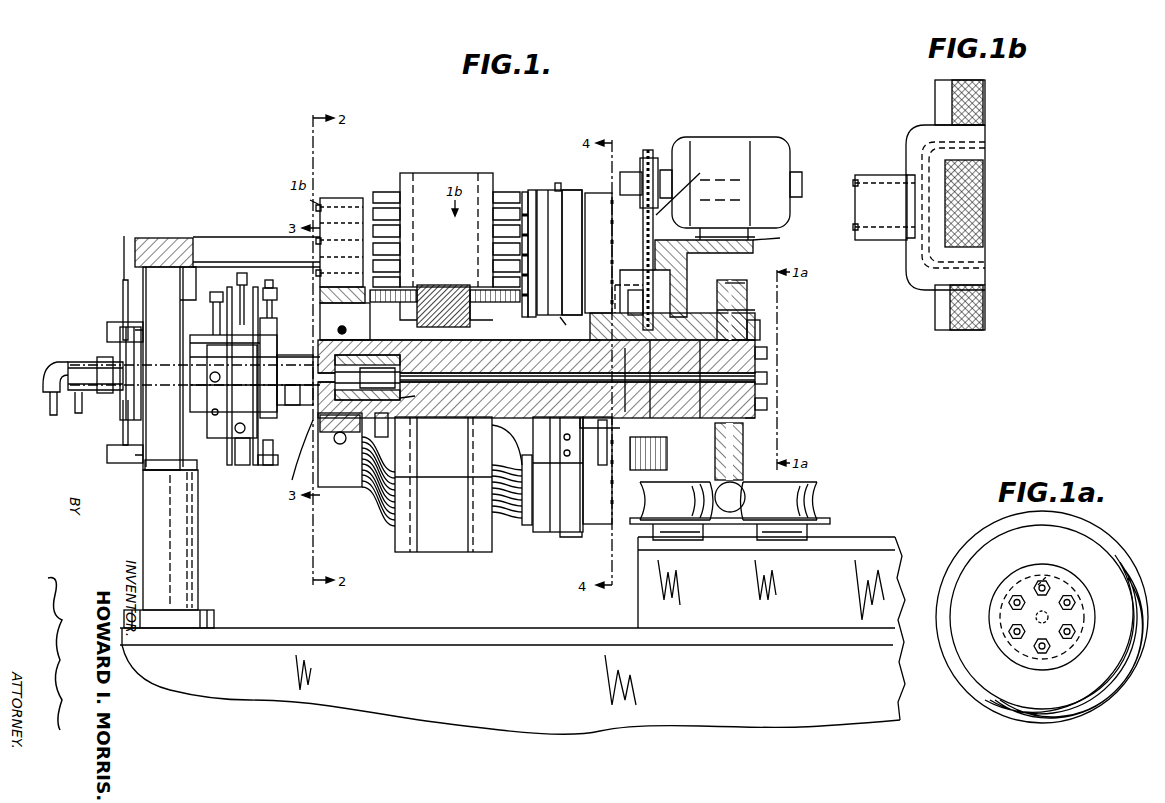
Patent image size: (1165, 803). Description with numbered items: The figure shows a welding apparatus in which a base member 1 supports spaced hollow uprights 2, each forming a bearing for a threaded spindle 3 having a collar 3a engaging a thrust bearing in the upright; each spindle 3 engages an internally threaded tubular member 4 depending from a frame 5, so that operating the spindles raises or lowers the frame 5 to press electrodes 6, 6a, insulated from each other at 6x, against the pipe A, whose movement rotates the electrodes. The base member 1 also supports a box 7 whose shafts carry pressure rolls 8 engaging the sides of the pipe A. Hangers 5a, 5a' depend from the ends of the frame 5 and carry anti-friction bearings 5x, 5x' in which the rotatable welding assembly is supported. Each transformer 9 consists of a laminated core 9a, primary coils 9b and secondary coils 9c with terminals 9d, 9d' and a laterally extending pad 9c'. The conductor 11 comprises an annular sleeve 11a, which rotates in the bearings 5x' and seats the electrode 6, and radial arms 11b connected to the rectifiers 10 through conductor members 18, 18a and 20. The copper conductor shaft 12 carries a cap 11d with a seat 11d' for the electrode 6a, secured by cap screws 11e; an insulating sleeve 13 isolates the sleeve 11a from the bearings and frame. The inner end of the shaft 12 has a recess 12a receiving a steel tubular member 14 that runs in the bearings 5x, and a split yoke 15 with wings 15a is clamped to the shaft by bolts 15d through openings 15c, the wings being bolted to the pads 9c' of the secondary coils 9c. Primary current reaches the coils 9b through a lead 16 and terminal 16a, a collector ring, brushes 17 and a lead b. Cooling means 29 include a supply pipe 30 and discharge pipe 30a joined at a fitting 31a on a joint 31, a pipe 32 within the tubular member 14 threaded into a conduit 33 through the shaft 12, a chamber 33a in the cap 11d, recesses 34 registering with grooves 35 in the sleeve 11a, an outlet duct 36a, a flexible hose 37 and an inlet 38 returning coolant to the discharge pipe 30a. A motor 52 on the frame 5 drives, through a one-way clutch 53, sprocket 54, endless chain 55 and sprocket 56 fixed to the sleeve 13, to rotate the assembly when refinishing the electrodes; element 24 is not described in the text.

In FIG. 1, the base member 1 is at (410, 708).
In FIG. 1, the hollow uprights 2 is at (188, 565).
In FIG. 1, the spindle 3 is at (668, 490).
In FIG. 1, the collar 3a is at (145, 470).
In FIG. 1, the tubular member 4 is at (200, 290).
In FIG. 1, the frame 5 is at (186, 222).
In FIG. 1, the hanger 5a is at (115, 288).
In FIG. 1, the hanger 5a' is at (672, 290).
In FIG. 1, the anti-friction bearings 5x is at (143, 373).
In FIG. 1, the anti-friction bearings 5x' is at (659, 455).
In FIG. 1, the electrode 6 is at (733, 282).
In FIG. 1, the electrode 6a is at (755, 310).
In FIG. 1A, the electrode 6a is at (1047, 695).
In FIG. 1, the insulation 6x is at (745, 283).
In FIG. 1, the box 7 is at (710, 620).
In FIG. 1, the pressure rolls 8 is at (638, 540).
In FIG. 1, the transformer 9 is at (444, 362).
In FIG. 1, the laminated core 9a is at (417, 325).
In FIG. 1B, the laminated core 9a is at (966, 330).
In FIG. 1, the primary coils 9b is at (380, 192).
In FIG. 1, the secondary coils 9c is at (470, 219).
In FIG. 1B, the secondary coils 9c is at (938, 225).
In FIG. 1B, the pad 9c' is at (893, 188).
In FIG. 1, the terminal 9d is at (528, 227).
In FIG. 1, the terminal 9d' is at (521, 506).
In FIG. 1, the rectifier 10 is at (559, 252).
In FIG. 1, the conductor 11 is at (536, 379).
In FIG. 1, the annular member or sleeve 11a is at (683, 379).
In FIG. 1, the arms 11b is at (590, 545).
In FIG. 1, the cap 11d is at (786, 368).
In FIG. 1A, the cap 11d is at (1069, 617).
In FIG. 1, the seat 11d' is at (786, 330).
In FIG. 1, the cap screws 11e is at (767, 402).
In FIG. 1, the conductor shaft 12 is at (509, 368).
In FIG. 1, the recess 12a is at (400, 362).
In FIG. 1, the sleeve 13 is at (706, 478).
In FIG. 1, the tubular member 14 is at (298, 457).
In FIG. 1, the yoke or spider 15 is at (325, 320).
In FIG. 1, the wings or arms 15a is at (340, 198).
In FIG. 1B, the wings or arms 15a is at (875, 240).
In FIG. 1, the through openings 15c is at (340, 295).
In FIG. 1, the bolts 15d is at (340, 450).
In FIG. 1, the lead 16 is at (313, 355).
In FIG. 1, the terminal 16a is at (292, 405).
In FIG. 1, the brushes 17 is at (277, 292).
In FIG. 1, the conductor member 18 is at (107, 452).
In FIG. 1, the conductor member 18a is at (558, 183).
In FIG. 1, the conductor member 20 is at (572, 252).
In FIG. 1, the ring 24 is at (566, 533).
In FIG. 1, the cooling means 29 is at (42, 372).
In FIG. 1, the supply pipe 30 is at (50, 405).
In FIG. 1, the discharge pipe 30a is at (77, 413).
In FIG. 1, the joint 31 is at (105, 393).
In FIG. 1, the fitting 31a is at (80, 362).
In FIG. 1, the pipe 32 is at (416, 403).
In FIG. 1, the conduit 33 is at (520, 340).
In FIG. 1A, the chamber 33a is at (1025, 640).
In FIG. 1, the recesses 34 is at (745, 420).
In FIG. 1A, the recesses 34 is at (1049, 582).
In FIG. 1, the grooves 35 is at (635, 380).
In FIG. 1, the outlet duct 36a is at (590, 413).
In FIG. 1, the flexible hose 37 is at (598, 454).
In FIG. 1, the inlet 38 is at (388, 430).
In FIG. 1, the motor 52 is at (740, 137).
In FIG. 1, the one-way revolution clutch 53 is at (632, 172).
In FIG. 1, the sprocket 54 is at (650, 150).
In FIG. 1, the endless chain 55 is at (690, 189).
In FIG. 1, the sprocket 56 is at (628, 300).
In FIG. 1, the pipe A is at (745, 495).
In FIG. 1, the lead b is at (105, 435).